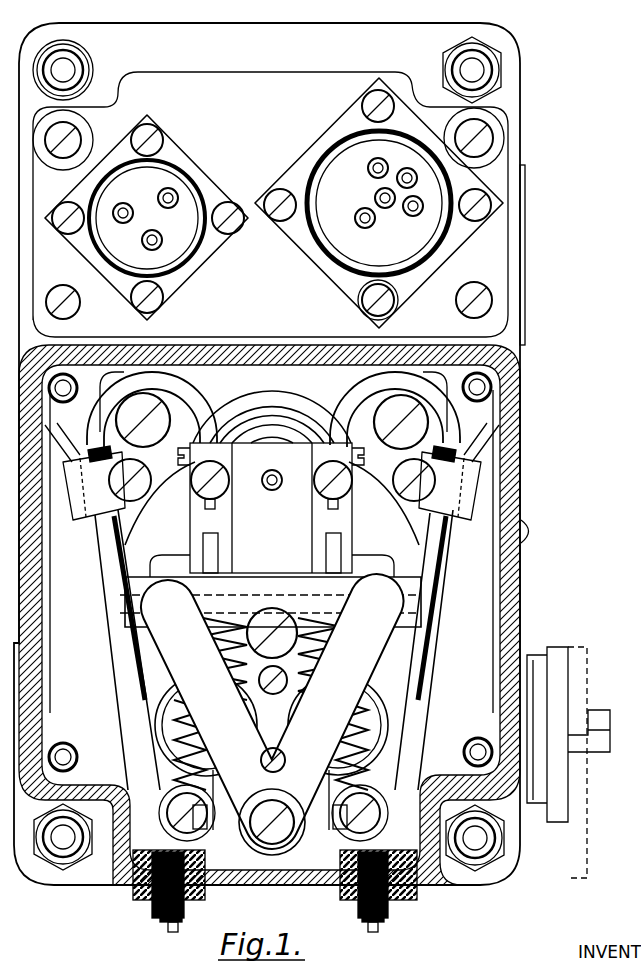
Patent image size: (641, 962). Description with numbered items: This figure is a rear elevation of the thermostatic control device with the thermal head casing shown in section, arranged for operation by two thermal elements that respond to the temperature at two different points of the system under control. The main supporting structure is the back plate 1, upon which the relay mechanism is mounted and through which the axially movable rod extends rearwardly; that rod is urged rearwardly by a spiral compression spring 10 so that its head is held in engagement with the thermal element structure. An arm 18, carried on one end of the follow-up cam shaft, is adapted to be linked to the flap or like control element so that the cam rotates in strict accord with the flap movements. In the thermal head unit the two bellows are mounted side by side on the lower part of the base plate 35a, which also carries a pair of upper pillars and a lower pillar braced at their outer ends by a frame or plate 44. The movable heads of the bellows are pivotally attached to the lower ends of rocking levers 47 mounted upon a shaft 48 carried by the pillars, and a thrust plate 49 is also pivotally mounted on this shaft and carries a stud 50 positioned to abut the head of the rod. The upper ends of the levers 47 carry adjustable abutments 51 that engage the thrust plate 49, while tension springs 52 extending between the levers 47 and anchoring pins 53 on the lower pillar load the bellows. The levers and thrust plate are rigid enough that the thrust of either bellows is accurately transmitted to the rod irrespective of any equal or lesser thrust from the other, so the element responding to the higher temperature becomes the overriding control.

The back plate 1 is at (507, 337).
The spiral compression spring 10 is at (250, 398).
The arm 18 is at (572, 848).
The base plate 35a is at (472, 640).
The frame or plate 44 is at (276, 840).
The rocking levers 47 is at (342, 520).
The shaft 48 is at (422, 603).
The thrust plate 49 is at (155, 540).
The stud 50 is at (268, 488).
The abutments 51 is at (323, 490).
The tension springs 52 is at (378, 872).
The anchoring pins 53 is at (198, 828).